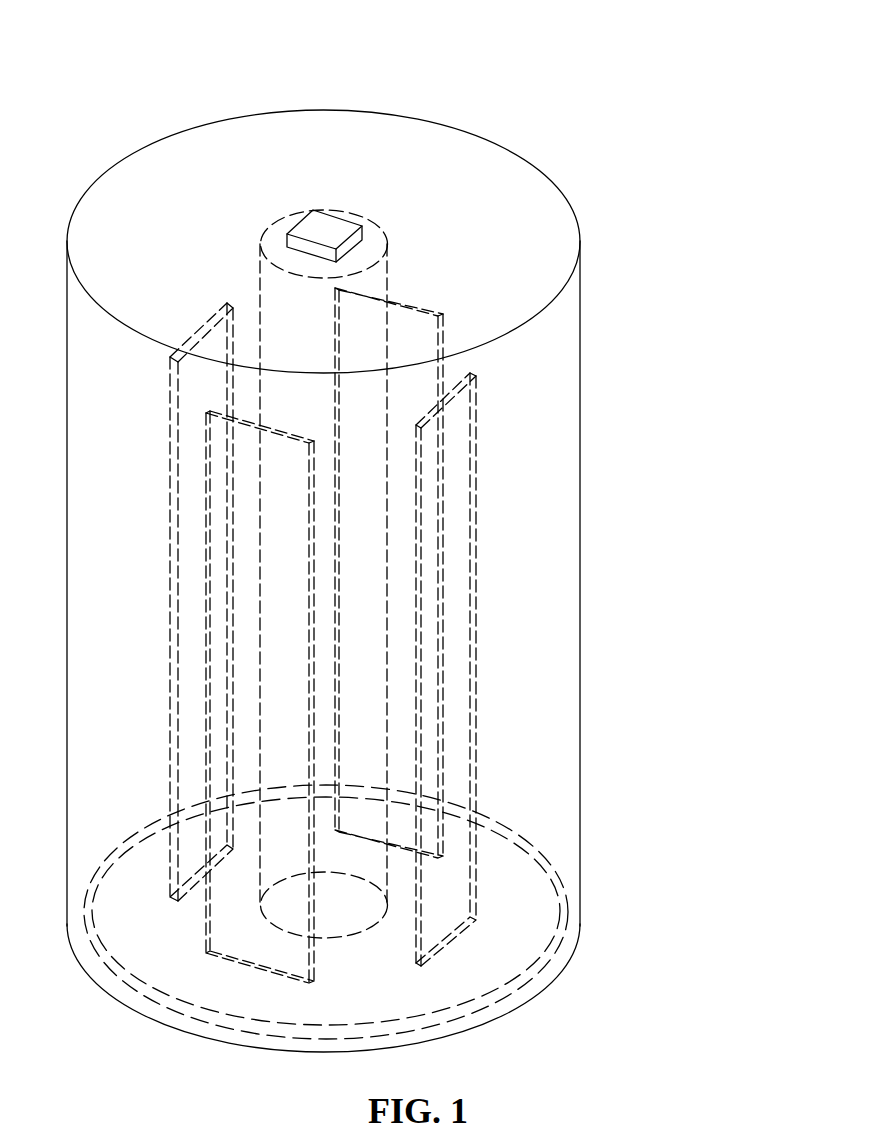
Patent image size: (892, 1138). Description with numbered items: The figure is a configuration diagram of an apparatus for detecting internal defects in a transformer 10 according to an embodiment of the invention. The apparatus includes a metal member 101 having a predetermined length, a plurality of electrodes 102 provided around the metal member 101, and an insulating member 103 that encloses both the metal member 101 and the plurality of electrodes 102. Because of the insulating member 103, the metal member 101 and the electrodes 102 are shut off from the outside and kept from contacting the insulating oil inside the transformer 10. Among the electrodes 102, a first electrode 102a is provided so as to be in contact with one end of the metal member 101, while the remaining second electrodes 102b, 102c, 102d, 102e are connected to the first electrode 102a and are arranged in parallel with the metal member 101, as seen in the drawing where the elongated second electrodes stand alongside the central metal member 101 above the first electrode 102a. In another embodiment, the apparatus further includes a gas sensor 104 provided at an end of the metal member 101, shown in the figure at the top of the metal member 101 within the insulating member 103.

The transformer 10 is at (402, 86).
The metal member 101 is at (381, 232).
The plurality of electrodes 102 is at (736, 648).
The first electrode 102a is at (528, 890).
The second electrode 102b is at (463, 752).
The second electrode 102c is at (407, 330).
The second electrode 102d is at (290, 625).
The second electrode 102e is at (207, 333).
The insulating member 103 is at (476, 157).
The gas sensor 104 is at (297, 228).